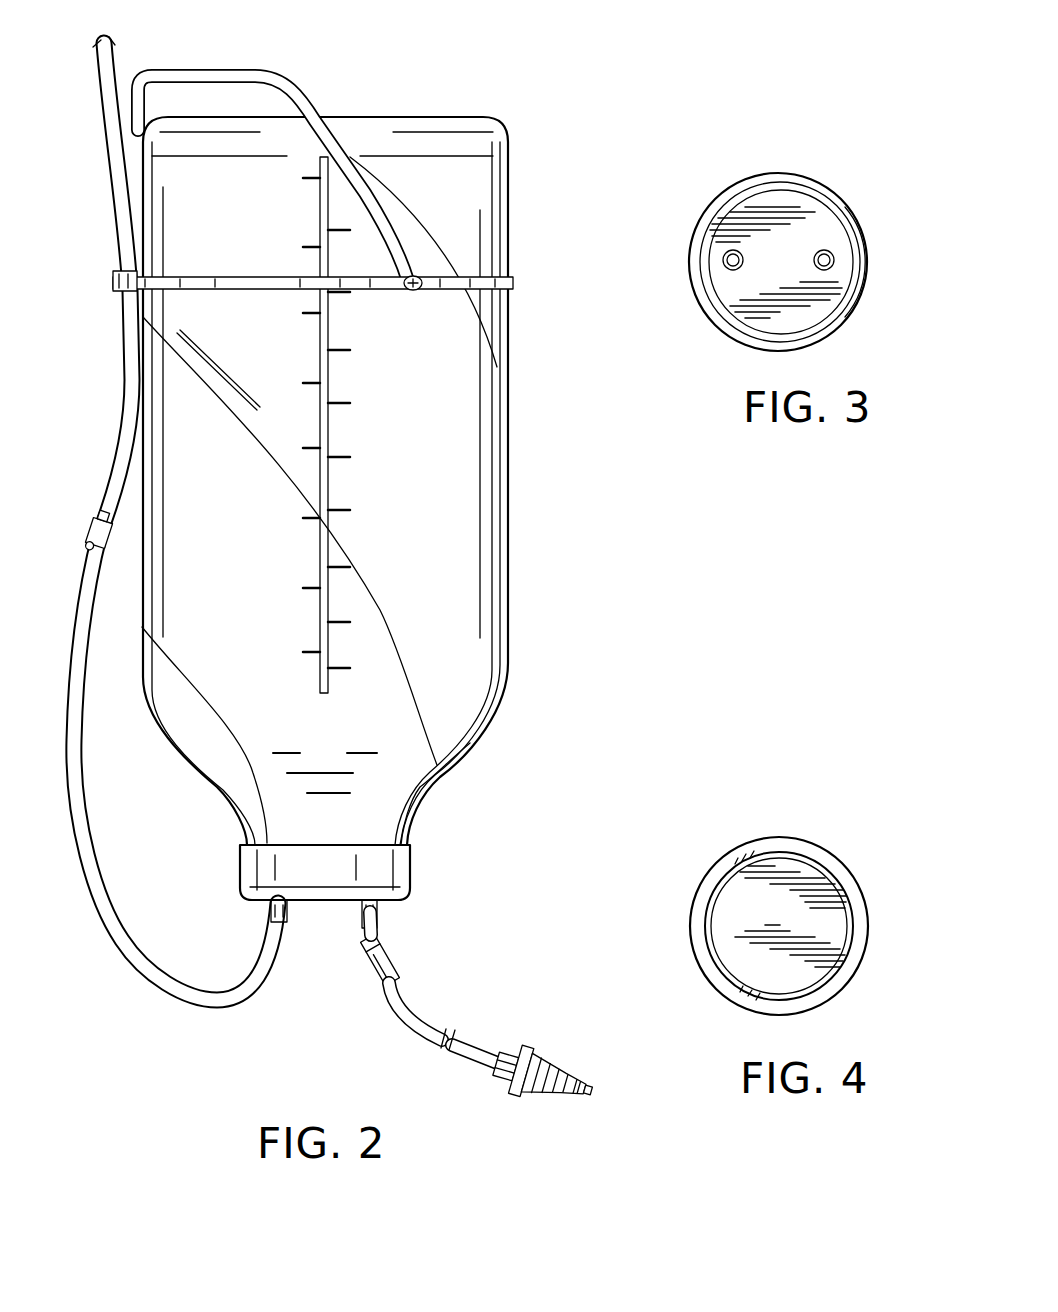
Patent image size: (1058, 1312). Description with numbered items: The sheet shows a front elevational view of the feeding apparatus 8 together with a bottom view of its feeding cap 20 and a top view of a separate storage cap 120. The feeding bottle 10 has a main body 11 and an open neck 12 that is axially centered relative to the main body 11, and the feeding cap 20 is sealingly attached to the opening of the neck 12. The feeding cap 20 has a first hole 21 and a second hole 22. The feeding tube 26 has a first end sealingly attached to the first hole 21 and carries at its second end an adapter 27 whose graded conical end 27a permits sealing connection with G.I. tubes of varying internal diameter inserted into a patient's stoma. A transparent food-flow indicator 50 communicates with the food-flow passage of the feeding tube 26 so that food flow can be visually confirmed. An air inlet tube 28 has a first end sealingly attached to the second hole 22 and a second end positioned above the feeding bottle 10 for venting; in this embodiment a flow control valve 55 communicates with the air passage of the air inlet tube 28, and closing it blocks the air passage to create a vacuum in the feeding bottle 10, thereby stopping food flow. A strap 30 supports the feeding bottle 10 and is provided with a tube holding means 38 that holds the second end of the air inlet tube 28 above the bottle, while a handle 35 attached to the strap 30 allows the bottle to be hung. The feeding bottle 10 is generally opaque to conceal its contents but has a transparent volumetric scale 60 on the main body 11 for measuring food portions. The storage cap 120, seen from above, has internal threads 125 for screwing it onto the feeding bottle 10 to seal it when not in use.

In FIG. 2, the feeding apparatus 8 is at (107, 163).
In FIG. 2, the feeding bottle 10 is at (516, 188).
In FIG. 2, the main body 11 is at (458, 512).
In FIG. 2, the open neck 12 is at (380, 833).
In FIG. 2, the feeding cap 20 is at (412, 865).
In FIG. 3, the feeding cap 20 is at (785, 185).
In FIG. 2, the first hole 21 is at (380, 905).
In FIG. 3, the first hole 21 is at (834, 258).
In FIG. 2, the second hole 22 is at (271, 908).
In FIG. 3, the second hole 22 is at (723, 260).
In FIG. 2, the feeding tube 26 is at (408, 1022).
In FIG. 2, the adapter 27 is at (546, 1036).
In FIG. 2, the graded conical end 27a is at (572, 1067).
In FIG. 2, the air inlet tube 28 is at (140, 975).
In FIG. 2, the strap 30 is at (513, 287).
In FIG. 2, the handle 35 is at (287, 80).
In FIG. 2, the tube holding means 38 is at (113, 281).
In FIG. 2, the transparent food-flow indicator 50 is at (392, 972).
In FIG. 2, the flow control valve 55 is at (90, 525).
In FIG. 2, the transparent volumetric scale 60 is at (333, 430).
In FIG. 4, the storage cap 120 is at (730, 888).
In FIG. 4, the internal threads 125 is at (710, 948).